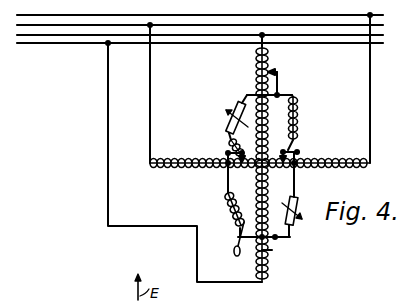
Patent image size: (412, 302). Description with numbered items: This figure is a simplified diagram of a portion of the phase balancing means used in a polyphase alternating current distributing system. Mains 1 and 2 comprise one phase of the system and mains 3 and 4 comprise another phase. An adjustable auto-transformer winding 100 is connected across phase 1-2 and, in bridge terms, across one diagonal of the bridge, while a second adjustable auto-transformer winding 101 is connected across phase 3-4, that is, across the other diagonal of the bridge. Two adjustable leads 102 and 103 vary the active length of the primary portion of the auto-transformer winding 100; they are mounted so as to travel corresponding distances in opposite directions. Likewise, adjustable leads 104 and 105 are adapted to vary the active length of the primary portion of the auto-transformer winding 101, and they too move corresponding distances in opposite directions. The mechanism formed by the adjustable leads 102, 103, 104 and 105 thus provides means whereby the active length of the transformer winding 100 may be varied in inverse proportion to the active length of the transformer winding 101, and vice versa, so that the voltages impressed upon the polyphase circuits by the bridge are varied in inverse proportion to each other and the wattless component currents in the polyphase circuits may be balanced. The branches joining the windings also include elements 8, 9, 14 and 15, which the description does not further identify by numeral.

The main 1 is at (34, 45).
The main 2 is at (58, 36).
The main 3 is at (82, 26).
The main 4 is at (102, 16).
The variable resistor 8 is at (236, 107).
The variable inductance coil 9 is at (229, 218).
The variable resistor 14 is at (298, 220).
The inductance coil 15 is at (299, 108).
The adjustable auto-transformer winding 100 is at (257, 50).
The adjustable auto-transformer winding 101 is at (304, 160).
The adjustable lead 102 is at (274, 254).
The adjustable lead 103 is at (290, 76).
The adjustable lead 104 is at (228, 146).
The adjustable lead 105 is at (303, 142).